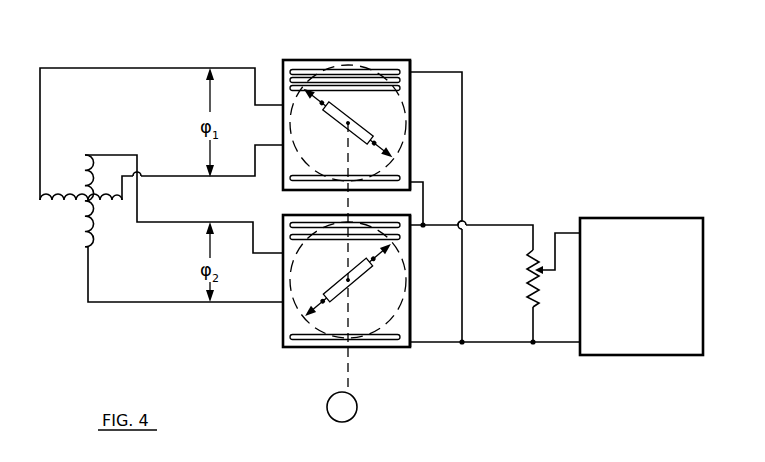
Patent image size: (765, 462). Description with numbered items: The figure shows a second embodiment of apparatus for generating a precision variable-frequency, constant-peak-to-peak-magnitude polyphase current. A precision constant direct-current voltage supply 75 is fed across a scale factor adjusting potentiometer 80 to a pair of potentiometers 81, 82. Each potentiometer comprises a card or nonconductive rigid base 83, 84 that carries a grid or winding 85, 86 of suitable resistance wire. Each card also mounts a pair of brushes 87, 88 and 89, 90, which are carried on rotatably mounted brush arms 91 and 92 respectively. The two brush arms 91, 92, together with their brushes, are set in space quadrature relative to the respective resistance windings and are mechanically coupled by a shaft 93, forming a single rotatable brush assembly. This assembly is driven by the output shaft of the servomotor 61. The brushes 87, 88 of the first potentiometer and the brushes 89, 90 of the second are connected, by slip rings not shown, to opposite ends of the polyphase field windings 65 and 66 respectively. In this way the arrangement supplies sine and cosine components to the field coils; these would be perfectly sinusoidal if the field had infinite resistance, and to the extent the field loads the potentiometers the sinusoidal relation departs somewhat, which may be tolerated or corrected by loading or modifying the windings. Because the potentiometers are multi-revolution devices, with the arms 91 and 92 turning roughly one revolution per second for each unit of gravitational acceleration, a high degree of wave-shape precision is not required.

The servomotor 61 is at (355, 404).
The polyphase field winding 65 is at (100, 208).
The polyphase field winding 66 is at (78, 173).
The precision constant direct-current voltage supply 75 is at (643, 345).
The scale factor adjusting potentiometer 80 is at (530, 283).
The potentiometer 81 is at (372, 50).
The potentiometer 82 is at (276, 326).
The card 83 is at (413, 98).
The card 84 is at (411, 277).
The winding 85 is at (306, 70).
The winding 86 is at (360, 340).
The brush 87 is at (327, 104).
The brush 88 is at (380, 148).
The brush 89 is at (321, 305).
The brush 90 is at (379, 251).
The brush arm 91 is at (356, 130).
The brush arm 92 is at (353, 264).
The shaft 93 is at (350, 200).